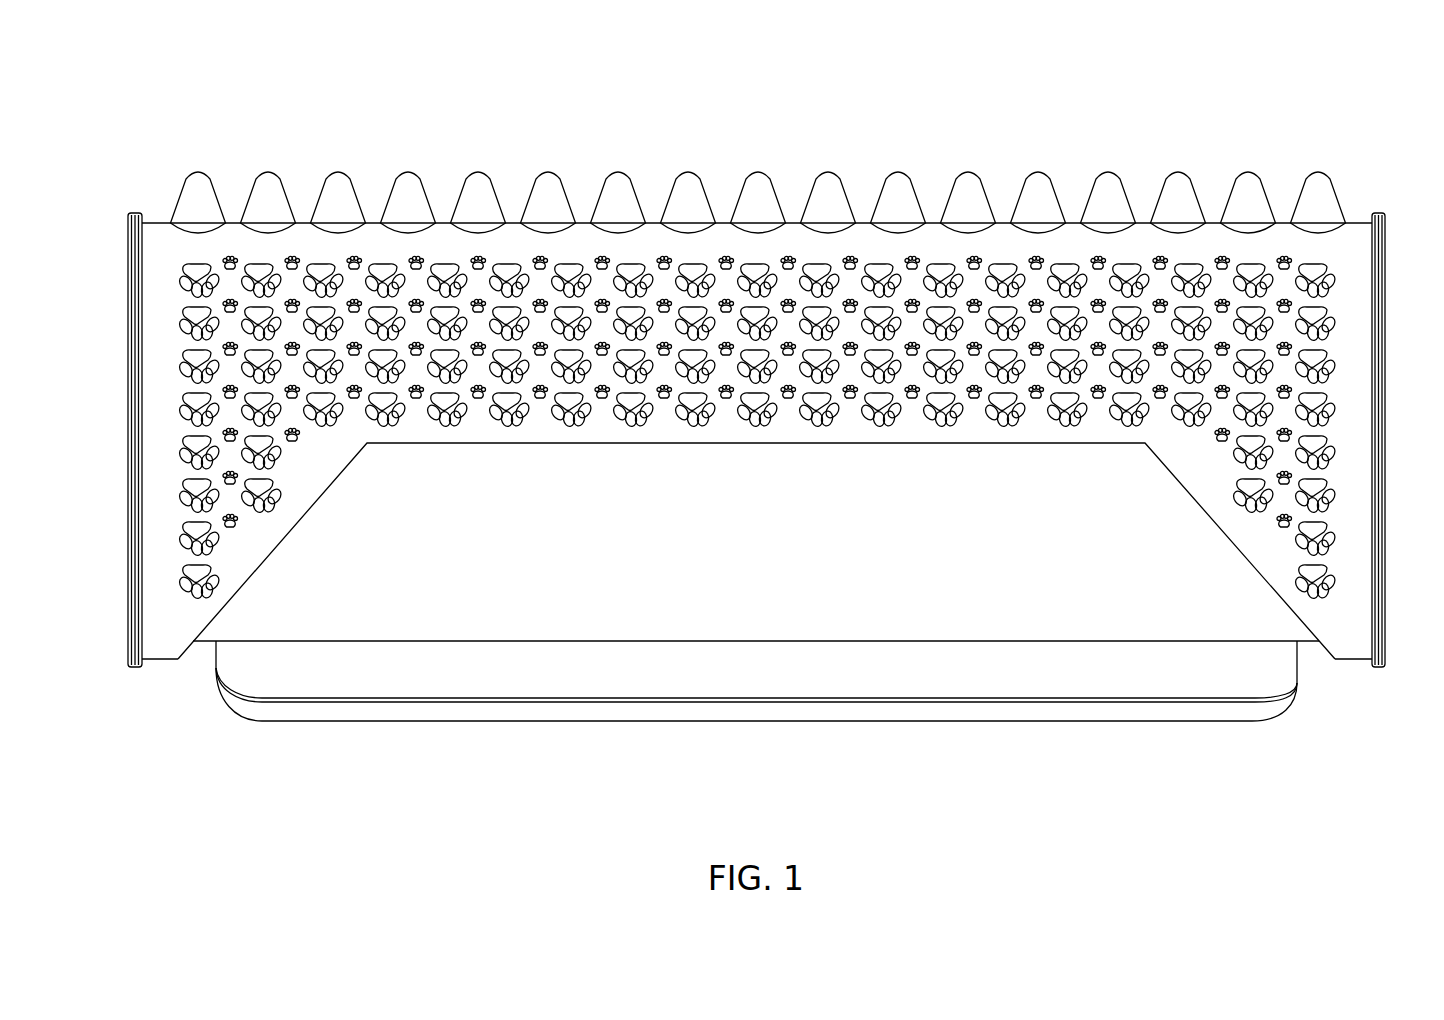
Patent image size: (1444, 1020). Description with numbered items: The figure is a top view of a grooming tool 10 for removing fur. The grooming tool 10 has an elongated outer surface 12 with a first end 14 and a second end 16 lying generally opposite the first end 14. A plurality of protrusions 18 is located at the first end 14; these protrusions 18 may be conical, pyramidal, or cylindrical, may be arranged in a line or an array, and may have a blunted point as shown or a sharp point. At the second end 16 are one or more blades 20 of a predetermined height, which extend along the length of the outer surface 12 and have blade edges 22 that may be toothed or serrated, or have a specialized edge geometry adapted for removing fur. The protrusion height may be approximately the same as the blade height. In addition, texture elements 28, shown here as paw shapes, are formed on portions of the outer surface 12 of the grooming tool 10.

The grooming tool 10 is at (153, 721).
The elongated outer surface 12 is at (1223, 628).
The first end 14 is at (800, 130).
The second end 16 is at (1038, 755).
The protrusions 18 is at (400, 171).
The blades 20 is at (581, 685).
The blade edges 22 is at (387, 722).
The texture elements 28 is at (1313, 270).